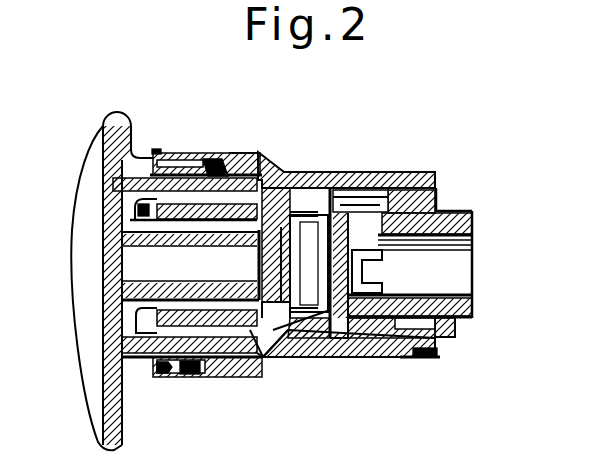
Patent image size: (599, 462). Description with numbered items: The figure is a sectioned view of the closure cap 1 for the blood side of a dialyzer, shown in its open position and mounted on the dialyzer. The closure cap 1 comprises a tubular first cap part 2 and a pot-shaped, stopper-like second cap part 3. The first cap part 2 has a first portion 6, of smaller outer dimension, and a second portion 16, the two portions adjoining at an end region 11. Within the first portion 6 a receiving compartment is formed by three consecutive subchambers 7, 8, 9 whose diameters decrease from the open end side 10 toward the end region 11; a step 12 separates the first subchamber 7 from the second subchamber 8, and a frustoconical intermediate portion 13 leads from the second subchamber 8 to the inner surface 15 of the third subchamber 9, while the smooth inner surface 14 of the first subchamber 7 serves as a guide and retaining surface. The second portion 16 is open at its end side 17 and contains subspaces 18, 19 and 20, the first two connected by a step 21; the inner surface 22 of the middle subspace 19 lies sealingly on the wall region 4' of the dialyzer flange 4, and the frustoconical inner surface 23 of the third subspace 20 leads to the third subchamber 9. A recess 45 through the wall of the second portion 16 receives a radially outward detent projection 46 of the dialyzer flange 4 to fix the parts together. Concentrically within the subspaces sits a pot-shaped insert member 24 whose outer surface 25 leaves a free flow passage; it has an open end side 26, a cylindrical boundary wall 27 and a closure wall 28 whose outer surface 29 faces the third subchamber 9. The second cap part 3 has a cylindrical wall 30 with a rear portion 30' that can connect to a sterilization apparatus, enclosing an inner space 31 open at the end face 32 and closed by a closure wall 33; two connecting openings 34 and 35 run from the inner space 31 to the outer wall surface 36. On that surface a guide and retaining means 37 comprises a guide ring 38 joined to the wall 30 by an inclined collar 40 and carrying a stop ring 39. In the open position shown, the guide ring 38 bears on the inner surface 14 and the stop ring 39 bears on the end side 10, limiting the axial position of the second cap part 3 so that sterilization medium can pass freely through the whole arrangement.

The closure cap 1 is at (432, 162).
The first cap part 2 is at (272, 161).
The second cap part 3 is at (448, 330).
The dialyzer flange 4 is at (105, 261).
The wall region 4' is at (157, 132).
The first portion 6 is at (409, 358).
The first subchamber 7 is at (338, 200).
The second subchamber 8 is at (348, 342).
The third subchamber 9 is at (309, 262).
The end side 10 is at (438, 352).
The end region 11 is at (277, 367).
The step 12 is at (352, 194).
The frustoconical intermediate portion 13 is at (322, 355).
The inner surface 14 is at (372, 192).
The inner surface 15 is at (314, 185).
The second portion 16 is at (150, 366).
The end side 17 is at (150, 157).
The subspace 18 is at (179, 154).
The subspace 19 is at (270, 360).
The subspace 20 is at (288, 196).
The step 21 is at (206, 156).
The inner surface 22 is at (230, 154).
The frustoconical inner surface 23 is at (252, 379).
The insert member 24 is at (141, 225).
The outer surface 25 is at (140, 200).
The open end side 26 is at (140, 303).
The boundary wall 27 is at (140, 316).
The closure wall 28 is at (222, 376).
The outer surface 29 is at (286, 350).
The wall 30 is at (450, 245).
The rear portion 30' is at (474, 339).
The inner space 31 is at (497, 250).
The end face 32 is at (474, 317).
The closure wall 33 is at (381, 271).
The connecting opening 34 is at (473, 228).
The connecting opening 35 is at (471, 292).
The outer wall surface 36 is at (374, 358).
The guide and retaining means 37 is at (431, 358).
The guide ring 38 is at (437, 185).
The stop ring 39 is at (440, 190).
The collar 40 is at (407, 175).
The recess 45 is at (160, 373).
The detent projection 46 is at (184, 375).